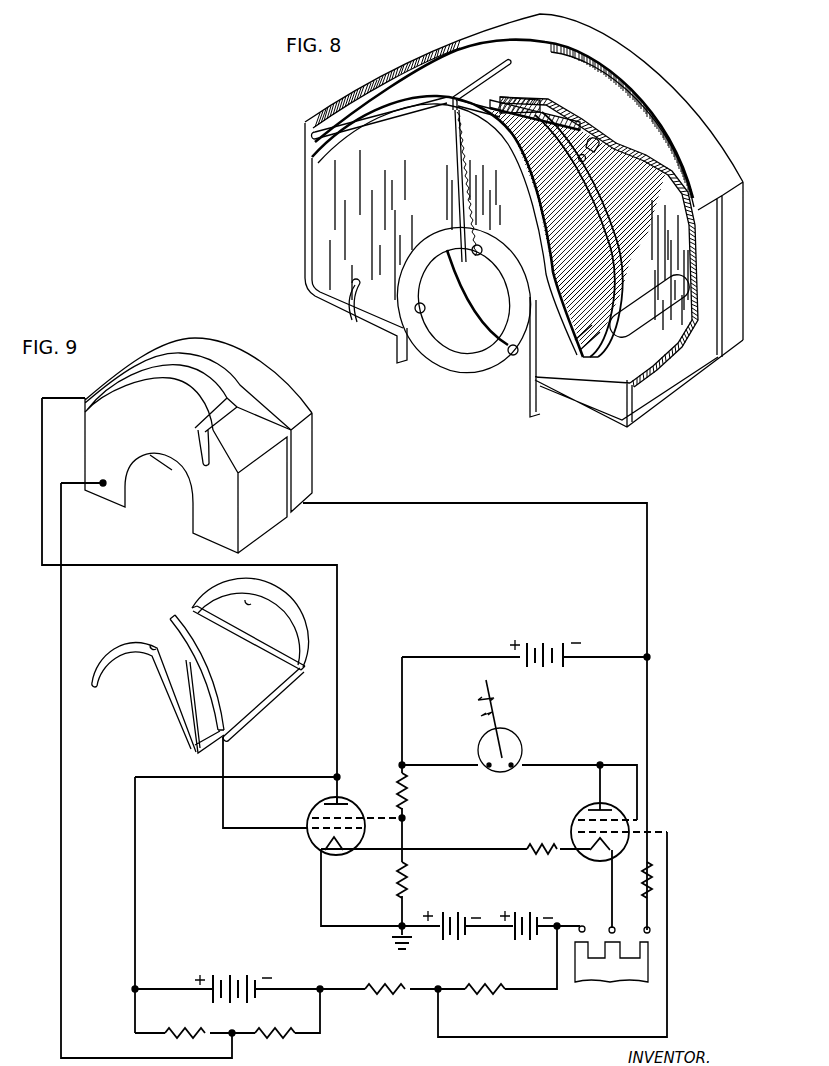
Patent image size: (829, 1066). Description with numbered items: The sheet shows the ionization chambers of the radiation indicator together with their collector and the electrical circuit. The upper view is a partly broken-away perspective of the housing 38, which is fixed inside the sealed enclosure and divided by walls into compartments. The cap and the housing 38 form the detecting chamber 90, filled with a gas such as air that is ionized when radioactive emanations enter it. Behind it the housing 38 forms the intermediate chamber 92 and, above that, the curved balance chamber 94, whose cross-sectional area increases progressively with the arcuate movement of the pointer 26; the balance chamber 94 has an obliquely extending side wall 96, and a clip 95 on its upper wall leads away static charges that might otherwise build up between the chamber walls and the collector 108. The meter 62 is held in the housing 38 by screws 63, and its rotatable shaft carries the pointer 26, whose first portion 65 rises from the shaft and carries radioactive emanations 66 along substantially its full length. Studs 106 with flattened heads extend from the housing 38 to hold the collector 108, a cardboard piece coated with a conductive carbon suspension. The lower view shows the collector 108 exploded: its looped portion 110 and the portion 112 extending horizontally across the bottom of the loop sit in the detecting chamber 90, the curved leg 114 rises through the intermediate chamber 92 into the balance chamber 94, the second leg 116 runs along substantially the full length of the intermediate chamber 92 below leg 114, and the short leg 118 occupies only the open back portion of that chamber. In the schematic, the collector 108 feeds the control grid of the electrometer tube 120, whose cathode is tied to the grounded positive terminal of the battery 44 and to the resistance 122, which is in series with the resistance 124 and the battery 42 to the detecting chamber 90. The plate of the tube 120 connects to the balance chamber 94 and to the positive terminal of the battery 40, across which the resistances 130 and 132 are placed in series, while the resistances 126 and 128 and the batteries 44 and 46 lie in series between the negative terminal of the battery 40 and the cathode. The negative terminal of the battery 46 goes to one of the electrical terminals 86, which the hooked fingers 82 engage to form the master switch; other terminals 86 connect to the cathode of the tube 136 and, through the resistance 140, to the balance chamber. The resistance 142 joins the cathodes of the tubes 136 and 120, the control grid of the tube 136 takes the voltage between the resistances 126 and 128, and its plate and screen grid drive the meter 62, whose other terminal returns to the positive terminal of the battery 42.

In FIG. 8, the housing 38 is at (638, 48).
In FIG. 8, the detecting chamber 90 is at (660, 90).
In FIG. 9, the detecting chamber 90 is at (267, 380).
In FIG. 8, the intermediate chamber 92 is at (318, 266).
In FIG. 9, the intermediate chamber 92 is at (205, 532).
In FIG. 8, the balance chamber 94 is at (420, 113).
In FIG. 9, the balance chamber 94 is at (135, 377).
In FIG. 8, the clip 95 is at (313, 138).
In FIG. 8, the side wall 96 is at (652, 156).
In FIG. 8, the pointer 26 is at (497, 76).
In FIG. 9, the pointer 26 is at (493, 690).
In FIG. 8, the first portion 65 is at (447, 130).
In FIG. 8, the radioactive emanations 66 is at (456, 181).
In FIG. 8, the meter 62 is at (453, 353).
In FIG. 9, the meter 62 is at (518, 739).
In FIG. 8, the screws 63 is at (513, 357).
In FIG. 8, the studs 106 is at (673, 297).
In FIG. 9, the collector 108 is at (267, 701).
In FIG. 9, the looped portion 110 is at (287, 621).
In FIG. 9, the portion 112 is at (258, 642).
In FIG. 8, the leg 114 is at (548, 143).
In FIG. 9, the leg 114 is at (180, 627).
In FIG. 8, the second leg 116 is at (573, 262).
In FIG. 9, the second leg 116 is at (170, 673).
In FIG. 8, the leg 118 is at (573, 223).
In FIG. 9, the leg 118 is at (197, 718).
In FIG. 9, the battery 42 is at (545, 670).
In FIG. 9, the resistance 124 is at (409, 804).
In FIG. 9, the resistance 122 is at (408, 877).
In FIG. 9, the electrometer tube 120 is at (310, 842).
In FIG. 9, the tube 136 is at (585, 806).
In FIG. 9, the resistance 142 is at (535, 839).
In FIG. 9, the resistance 140 is at (651, 894).
In FIG. 9, the battery 44 is at (456, 915).
In FIG. 9, the battery 46 is at (522, 914).
In FIG. 9, the electrical terminals 86 is at (611, 927).
In FIG. 9, the electrical fingers 82 is at (645, 960).
In FIG. 9, the resistance 128 is at (492, 983).
In FIG. 9, the resistance 126 is at (369, 997).
In FIG. 9, the battery 40 is at (237, 978).
In FIG. 9, the resistance 130 is at (180, 1023).
In FIG. 9, the resistance 132 is at (283, 1046).